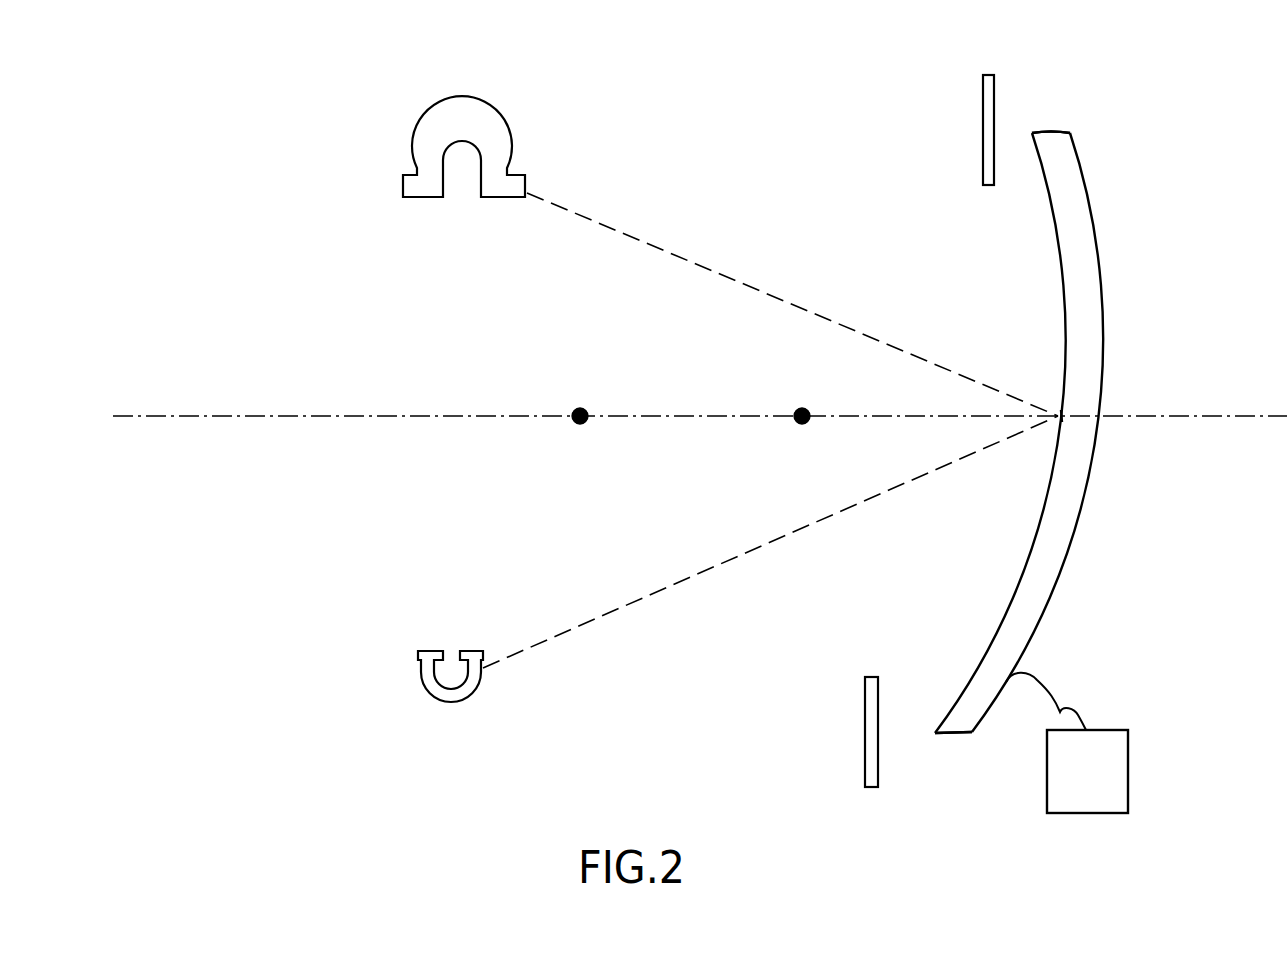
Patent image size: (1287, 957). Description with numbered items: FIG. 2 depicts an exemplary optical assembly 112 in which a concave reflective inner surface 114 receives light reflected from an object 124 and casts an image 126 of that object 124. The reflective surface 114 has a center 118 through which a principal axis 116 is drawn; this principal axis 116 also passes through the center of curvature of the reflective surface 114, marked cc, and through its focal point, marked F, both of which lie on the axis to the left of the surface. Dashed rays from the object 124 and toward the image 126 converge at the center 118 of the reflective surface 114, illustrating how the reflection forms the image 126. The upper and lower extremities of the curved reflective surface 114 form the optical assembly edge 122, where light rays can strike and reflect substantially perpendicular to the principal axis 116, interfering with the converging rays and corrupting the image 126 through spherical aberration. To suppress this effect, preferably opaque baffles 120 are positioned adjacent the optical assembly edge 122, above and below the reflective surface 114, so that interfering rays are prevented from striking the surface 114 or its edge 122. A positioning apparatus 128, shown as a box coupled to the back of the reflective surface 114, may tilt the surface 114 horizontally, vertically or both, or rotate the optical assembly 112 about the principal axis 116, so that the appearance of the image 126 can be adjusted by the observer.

The optical assembly 112 is at (368, 139).
The reflective inner surface 114 is at (1066, 350).
The principal axis 116 is at (361, 416).
The center 118 is at (1060, 418).
The baffles 120 is at (982, 143).
The optical assembly edge 122 is at (1073, 136).
The object 124 is at (465, 691).
The image 126 is at (432, 188).
The positioning apparatus 128 is at (1128, 755).